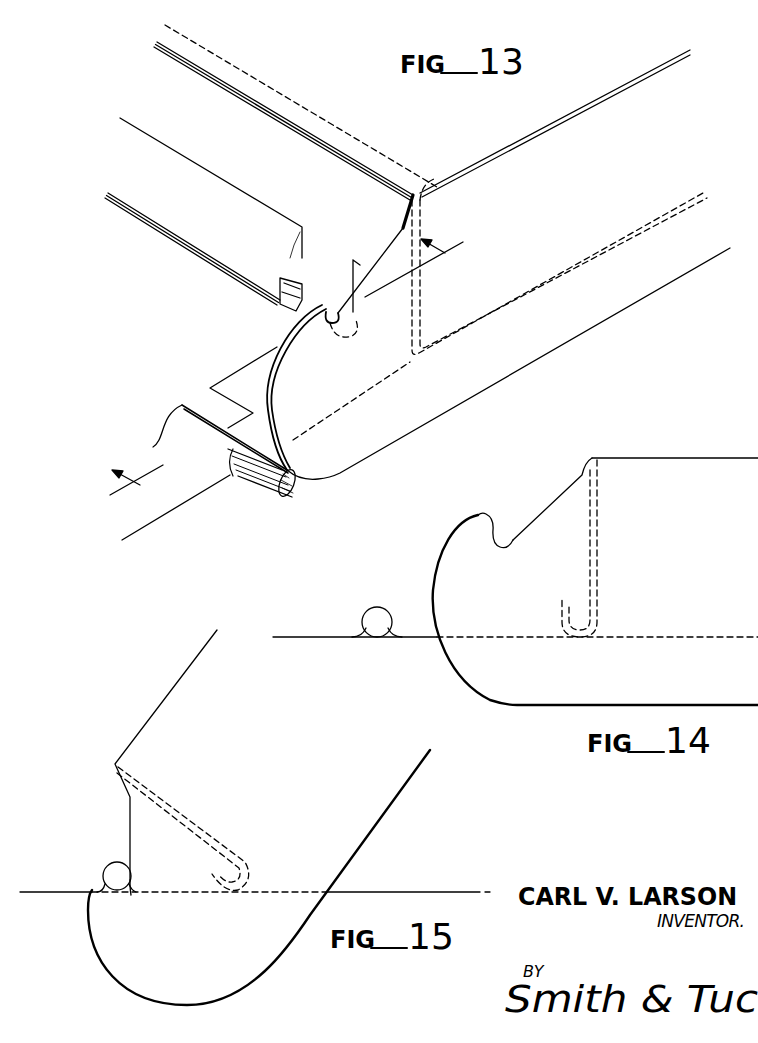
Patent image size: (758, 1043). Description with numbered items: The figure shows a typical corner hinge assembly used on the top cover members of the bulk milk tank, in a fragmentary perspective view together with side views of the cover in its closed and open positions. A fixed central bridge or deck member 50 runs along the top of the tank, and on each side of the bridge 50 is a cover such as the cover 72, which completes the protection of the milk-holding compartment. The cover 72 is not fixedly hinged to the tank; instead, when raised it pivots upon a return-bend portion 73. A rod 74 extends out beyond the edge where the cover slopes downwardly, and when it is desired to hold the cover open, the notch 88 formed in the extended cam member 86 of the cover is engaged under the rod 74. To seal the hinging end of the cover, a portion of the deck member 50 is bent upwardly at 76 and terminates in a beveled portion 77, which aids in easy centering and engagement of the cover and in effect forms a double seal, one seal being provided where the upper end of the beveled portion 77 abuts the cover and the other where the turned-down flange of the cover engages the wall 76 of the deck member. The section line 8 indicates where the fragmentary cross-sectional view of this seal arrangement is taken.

In FIG. 13, the bridge portion 50 is at (344, 412).
In FIG. 14, the bridge portion 50 is at (318, 635).
In FIG. 15, the bridge portion 50 is at (68, 893).
In FIG. 13, the cover 72 is at (318, 193).
In FIG. 14, the cover 72 is at (703, 502).
In FIG. 15, the cover 72 is at (263, 726).
In FIG. 13, the return-bend portion 73 is at (296, 311).
In FIG. 14, the return-bend portion 73 is at (558, 625).
In FIG. 15, the return-bend portion 73 is at (250, 877).
In FIG. 13, the rod 74 is at (266, 488).
In FIG. 14, the rod 74 is at (380, 612).
In FIG. 15, the rod 74 is at (115, 866).
In FIG. 13, the upwardly bent portion 76 is at (422, 362).
In FIG. 13, the beveled portion 77 is at (420, 222).
In FIG. 13, the cam member 86 is at (336, 409).
In FIG. 14, the cam member 86 is at (501, 616).
In FIG. 15, the cam member 86 is at (233, 934).
In FIG. 13, the notch 88 is at (358, 326).
In FIG. 14, the notch 88 is at (493, 520).
In FIG. 15, the notch 88 is at (131, 895).
In FIG. 13, the section line 8 is at (286, 375).